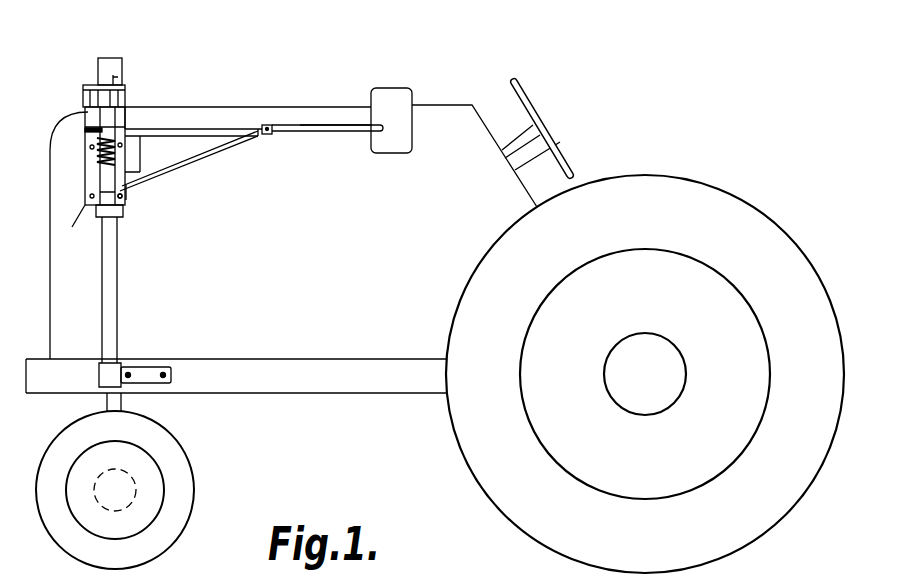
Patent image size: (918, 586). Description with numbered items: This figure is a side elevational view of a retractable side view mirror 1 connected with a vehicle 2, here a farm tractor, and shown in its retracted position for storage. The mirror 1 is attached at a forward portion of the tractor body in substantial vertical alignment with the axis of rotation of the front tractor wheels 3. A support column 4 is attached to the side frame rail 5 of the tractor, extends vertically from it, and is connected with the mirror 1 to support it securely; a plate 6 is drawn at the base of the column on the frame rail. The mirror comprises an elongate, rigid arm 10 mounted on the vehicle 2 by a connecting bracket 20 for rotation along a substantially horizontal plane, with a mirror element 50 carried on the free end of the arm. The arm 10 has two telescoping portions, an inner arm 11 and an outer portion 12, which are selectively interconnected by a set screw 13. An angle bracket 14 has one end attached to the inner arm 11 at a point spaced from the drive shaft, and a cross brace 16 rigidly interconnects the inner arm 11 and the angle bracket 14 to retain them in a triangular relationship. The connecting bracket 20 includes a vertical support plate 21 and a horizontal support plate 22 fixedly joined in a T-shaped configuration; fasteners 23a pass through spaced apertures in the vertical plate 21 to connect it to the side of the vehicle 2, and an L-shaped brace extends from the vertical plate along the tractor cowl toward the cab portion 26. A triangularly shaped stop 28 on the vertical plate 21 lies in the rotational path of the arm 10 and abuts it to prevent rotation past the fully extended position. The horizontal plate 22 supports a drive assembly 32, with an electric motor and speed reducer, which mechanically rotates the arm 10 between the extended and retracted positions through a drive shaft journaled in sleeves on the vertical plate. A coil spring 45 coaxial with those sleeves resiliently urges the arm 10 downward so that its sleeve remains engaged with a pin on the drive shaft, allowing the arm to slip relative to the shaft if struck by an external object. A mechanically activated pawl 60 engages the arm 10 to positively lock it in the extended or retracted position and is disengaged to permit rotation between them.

The retractable side view mirror 1 is at (150, 97).
The vehicle 2 is at (452, 101).
The front tractor wheels 3 is at (177, 470).
The support column 4 is at (112, 283).
The side frame rail 5 is at (218, 378).
The mounting plate 6 is at (143, 372).
The arm 10 is at (294, 123).
The inner arm portion 11 is at (220, 129).
The outer arm portion 12 is at (328, 131).
The set screw 13 is at (266, 135).
The angle bracket 14 is at (187, 158).
The cross brace 16 is at (137, 152).
The connecting bracket 20 is at (88, 166).
The vertical support plate 21 is at (74, 230).
The horizontal support plate 22 is at (127, 104).
The fasteners 23a is at (124, 197).
The cab portion 26 is at (561, 143).
The stop 28 is at (84, 117).
The drive assembly 32 is at (123, 61).
The coil spring 45 is at (100, 134).
The mirror element 50 is at (412, 87).
The pawl 60 is at (88, 86).